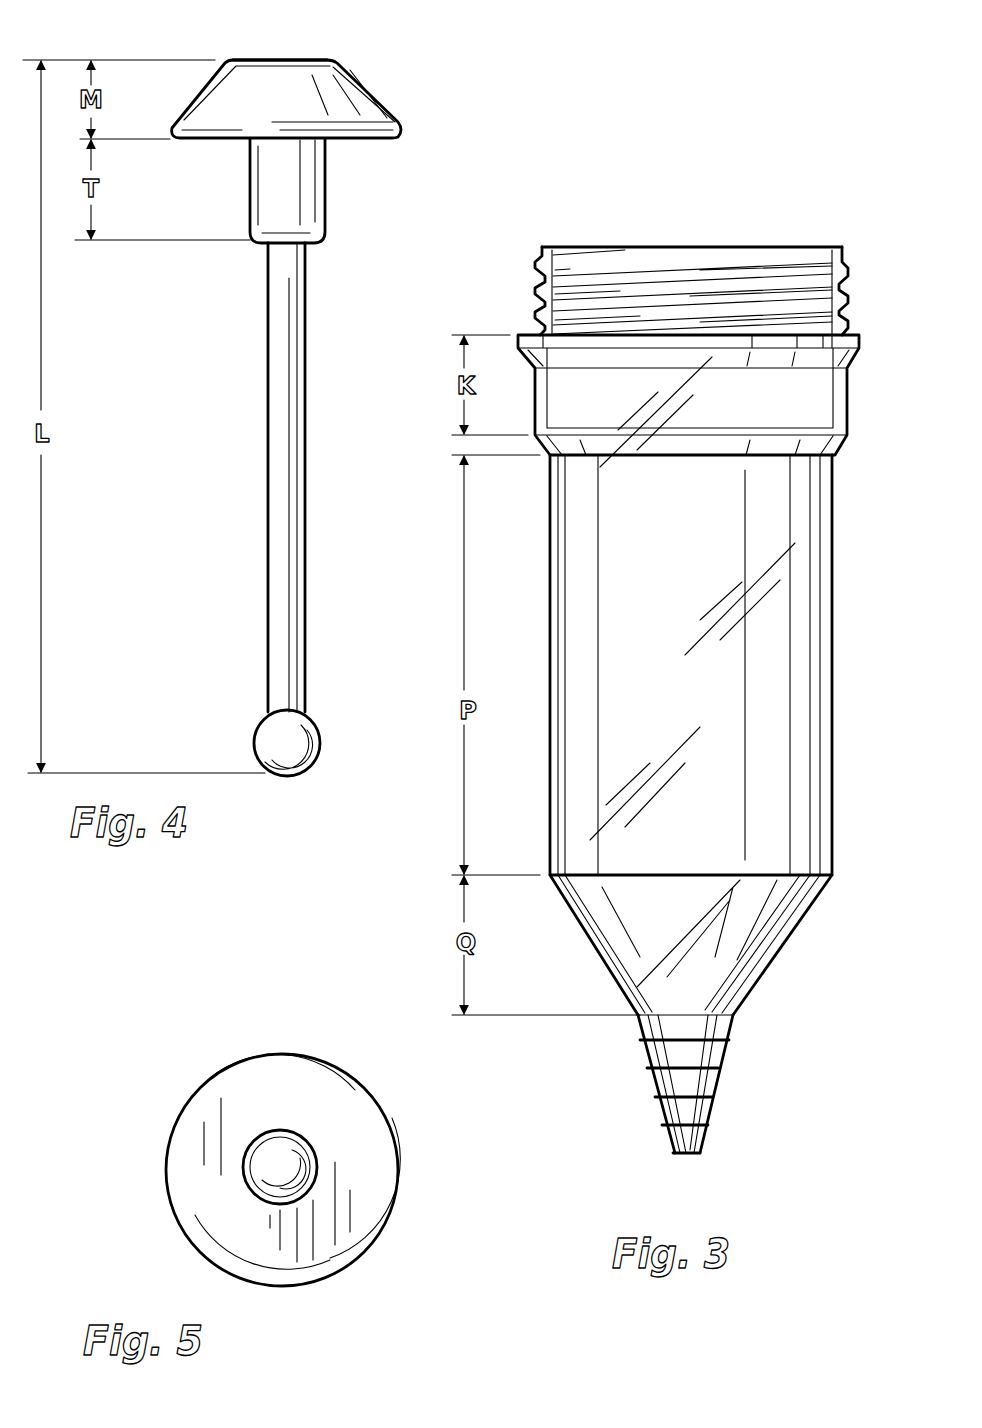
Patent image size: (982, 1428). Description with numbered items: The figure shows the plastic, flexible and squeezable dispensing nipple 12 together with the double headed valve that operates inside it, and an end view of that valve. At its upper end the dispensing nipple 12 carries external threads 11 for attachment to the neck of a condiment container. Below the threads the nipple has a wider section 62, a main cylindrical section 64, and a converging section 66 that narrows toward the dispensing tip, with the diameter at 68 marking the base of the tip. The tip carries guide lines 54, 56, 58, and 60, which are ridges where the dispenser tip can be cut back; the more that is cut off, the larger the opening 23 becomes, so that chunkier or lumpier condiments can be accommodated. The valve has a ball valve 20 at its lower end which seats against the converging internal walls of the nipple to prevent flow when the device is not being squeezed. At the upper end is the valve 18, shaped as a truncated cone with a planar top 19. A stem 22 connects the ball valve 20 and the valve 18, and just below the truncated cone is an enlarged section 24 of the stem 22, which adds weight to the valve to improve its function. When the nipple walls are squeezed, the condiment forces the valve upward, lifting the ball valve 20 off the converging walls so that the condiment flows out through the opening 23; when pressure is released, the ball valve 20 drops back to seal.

In FIG. 3, the external threads 11 is at (537, 265).
In FIG. 3, the dispensing nipple 12 is at (685, 711).
In FIG. 4, the valve 18 is at (378, 98).
In FIG. 5, the valve 18 is at (190, 1185).
In FIG. 4, the planar top 19 is at (312, 60).
In FIG. 4, the ball valve 20 is at (275, 738).
In FIG. 5, the ball valve 20 is at (277, 1163).
In FIG. 4, the stem 22 is at (276, 508).
In FIG. 3, the opening 23 is at (678, 1153).
In FIG. 4, the enlarged section 24 is at (327, 197).
In FIG. 3, the guide line 54 is at (729, 1040).
In FIG. 3, the guide line 56 is at (720, 1068).
In FIG. 3, the guide line 58 is at (712, 1097).
In FIG. 3, the guide line 60 is at (708, 1125).
In FIG. 3, the section 62 is at (848, 408).
In FIG. 3, the section 64 is at (548, 558).
In FIG. 3, the section 66 is at (588, 940).
In FIG. 3, the diameter location 68 is at (638, 1013).